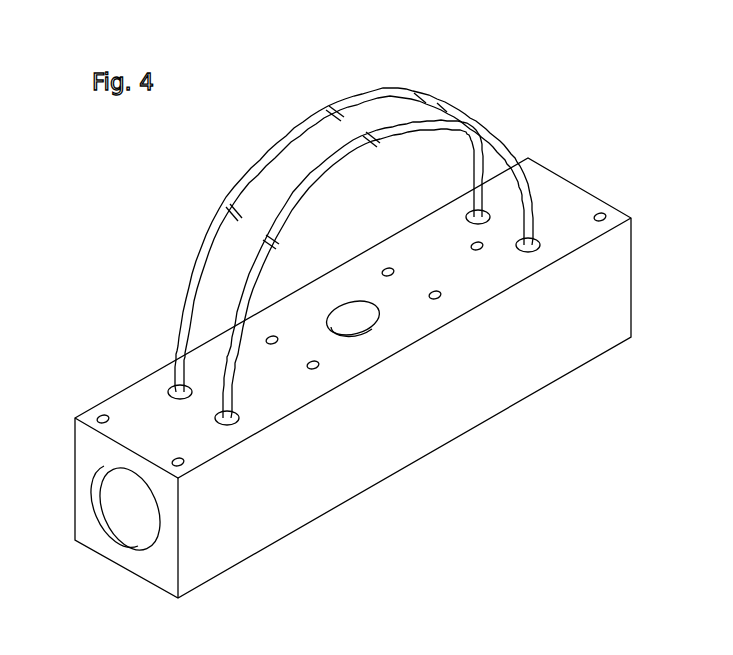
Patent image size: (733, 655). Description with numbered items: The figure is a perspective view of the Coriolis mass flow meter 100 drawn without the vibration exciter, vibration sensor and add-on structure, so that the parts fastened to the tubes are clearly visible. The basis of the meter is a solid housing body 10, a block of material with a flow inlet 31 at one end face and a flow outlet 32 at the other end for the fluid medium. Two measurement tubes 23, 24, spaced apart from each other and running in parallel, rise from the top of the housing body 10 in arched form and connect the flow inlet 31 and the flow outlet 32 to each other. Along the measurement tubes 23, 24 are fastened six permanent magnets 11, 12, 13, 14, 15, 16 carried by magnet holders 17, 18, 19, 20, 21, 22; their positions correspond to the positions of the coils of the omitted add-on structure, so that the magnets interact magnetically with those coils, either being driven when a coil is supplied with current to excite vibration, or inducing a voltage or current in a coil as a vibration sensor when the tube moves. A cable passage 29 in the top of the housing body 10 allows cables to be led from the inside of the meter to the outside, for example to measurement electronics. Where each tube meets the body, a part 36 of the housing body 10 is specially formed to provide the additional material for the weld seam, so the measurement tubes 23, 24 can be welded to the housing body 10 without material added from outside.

The Coriolis mass flow meter 100 is at (517, 508).
The housing body 10 is at (329, 392).
The permanent magnet 11 is at (241, 226).
The permanent magnet 12 is at (334, 125).
The permanent magnet 13 is at (442, 104).
The permanent magnet 14 is at (272, 236).
The permanent magnet 15 is at (374, 139).
The permanent magnet 16 is at (470, 130).
The magnet holder 17 is at (250, 223).
The magnet holder 18 is at (331, 106).
The magnet holder 19 is at (420, 95).
The magnet holder 20 is at (281, 243).
The magnet holder 21 is at (373, 147).
The magnet holder 22 is at (476, 124).
The measurement tube 23 is at (190, 290).
The measurement tube 24 is at (230, 362).
The cable passage 29 is at (357, 323).
The flow inlet 31 is at (130, 518).
The flow outlet 32 is at (618, 200).
The part of the housing body 36 is at (153, 390).